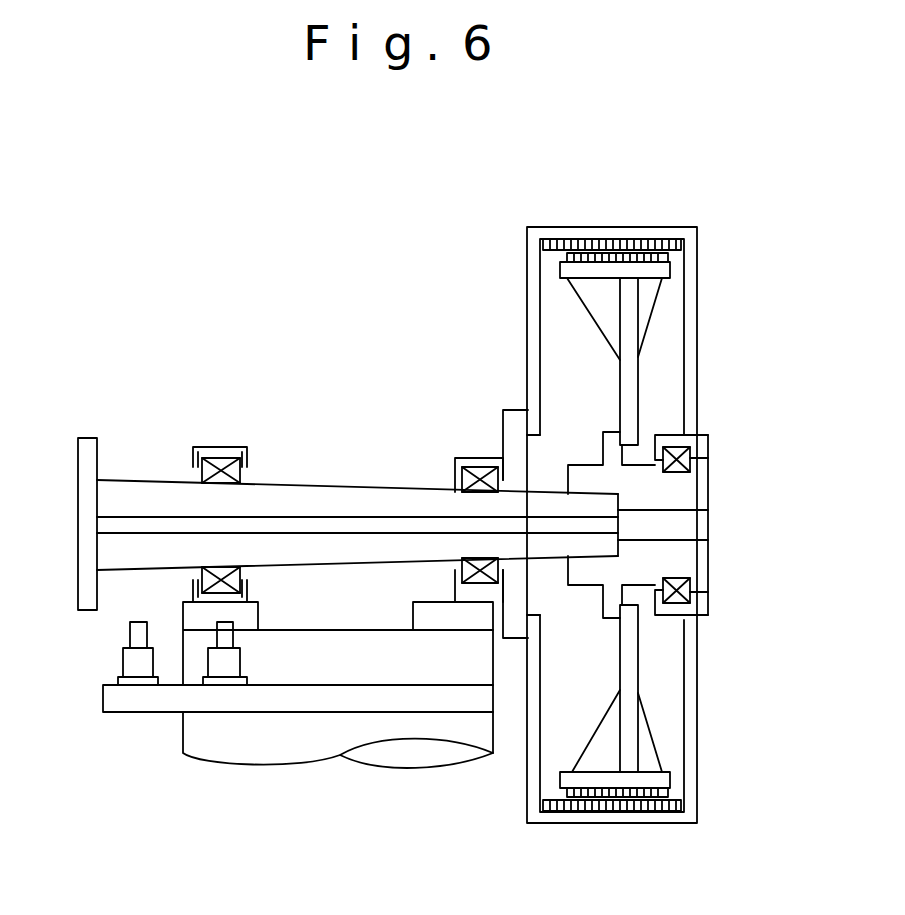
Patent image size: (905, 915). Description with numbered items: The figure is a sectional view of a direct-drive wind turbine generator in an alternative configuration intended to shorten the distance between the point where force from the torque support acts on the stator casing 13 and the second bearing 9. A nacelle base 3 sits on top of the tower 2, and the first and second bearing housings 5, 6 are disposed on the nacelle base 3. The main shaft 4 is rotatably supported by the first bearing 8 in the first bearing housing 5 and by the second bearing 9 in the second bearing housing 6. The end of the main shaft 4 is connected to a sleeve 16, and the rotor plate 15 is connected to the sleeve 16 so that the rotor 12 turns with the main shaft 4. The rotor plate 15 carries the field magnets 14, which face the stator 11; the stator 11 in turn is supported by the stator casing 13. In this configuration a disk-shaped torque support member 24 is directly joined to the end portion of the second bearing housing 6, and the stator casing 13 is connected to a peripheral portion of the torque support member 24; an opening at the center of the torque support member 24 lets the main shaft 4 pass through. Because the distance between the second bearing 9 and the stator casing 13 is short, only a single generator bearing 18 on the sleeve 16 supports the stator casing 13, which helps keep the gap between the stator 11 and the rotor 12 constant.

The tower 2 is at (187, 737).
The nacelle base 3 is at (190, 660).
The main shaft 4 is at (88, 438).
The first bearing housing 5 is at (207, 447).
The second bearing housing 6 is at (468, 458).
The first bearing 8 is at (227, 447).
The second bearing 9 is at (460, 485).
The stator 11 is at (647, 248).
The rotor 12 is at (672, 392).
The stator casing 13 is at (527, 267).
The field magnets 14 is at (675, 263).
The rotor plate 15 is at (634, 370).
The sleeve 16 is at (702, 493).
The generator bearing 18 is at (707, 463).
The torque support member 24 is at (522, 632).